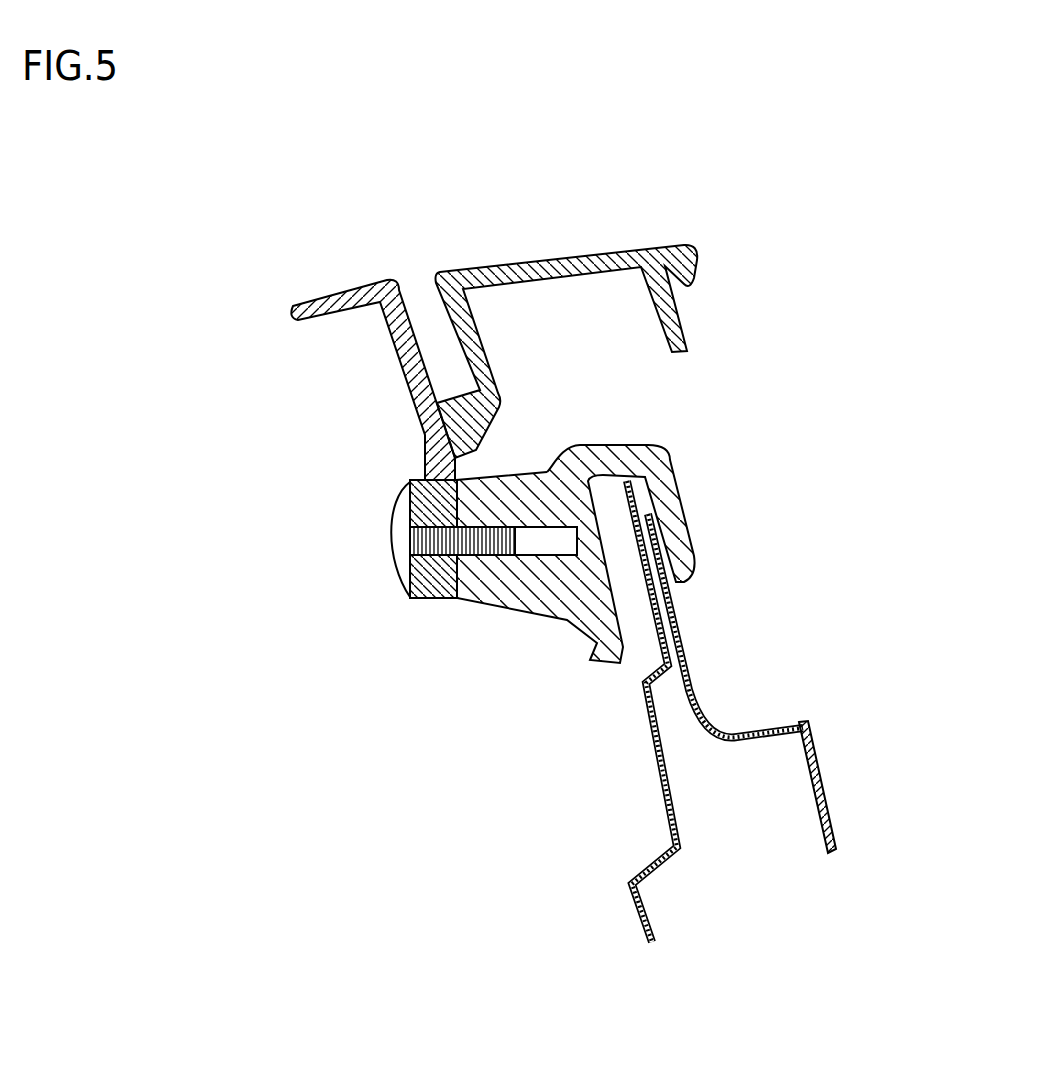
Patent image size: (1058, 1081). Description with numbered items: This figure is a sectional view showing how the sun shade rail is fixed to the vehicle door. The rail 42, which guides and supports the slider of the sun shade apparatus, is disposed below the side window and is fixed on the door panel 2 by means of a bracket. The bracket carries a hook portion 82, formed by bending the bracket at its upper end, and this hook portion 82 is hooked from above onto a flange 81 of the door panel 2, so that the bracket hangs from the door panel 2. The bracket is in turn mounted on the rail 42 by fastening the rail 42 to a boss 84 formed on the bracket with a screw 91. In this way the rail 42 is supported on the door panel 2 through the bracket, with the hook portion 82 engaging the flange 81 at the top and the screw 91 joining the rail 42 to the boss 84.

The door panel 2 is at (817, 770).
The rail 42 is at (392, 350).
The flange 81 is at (680, 627).
The hook portion 82 is at (632, 448).
The boss 84 is at (467, 585).
The screw 91 is at (406, 550).